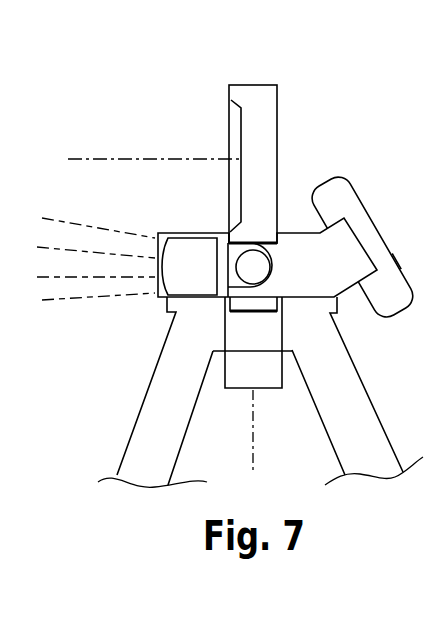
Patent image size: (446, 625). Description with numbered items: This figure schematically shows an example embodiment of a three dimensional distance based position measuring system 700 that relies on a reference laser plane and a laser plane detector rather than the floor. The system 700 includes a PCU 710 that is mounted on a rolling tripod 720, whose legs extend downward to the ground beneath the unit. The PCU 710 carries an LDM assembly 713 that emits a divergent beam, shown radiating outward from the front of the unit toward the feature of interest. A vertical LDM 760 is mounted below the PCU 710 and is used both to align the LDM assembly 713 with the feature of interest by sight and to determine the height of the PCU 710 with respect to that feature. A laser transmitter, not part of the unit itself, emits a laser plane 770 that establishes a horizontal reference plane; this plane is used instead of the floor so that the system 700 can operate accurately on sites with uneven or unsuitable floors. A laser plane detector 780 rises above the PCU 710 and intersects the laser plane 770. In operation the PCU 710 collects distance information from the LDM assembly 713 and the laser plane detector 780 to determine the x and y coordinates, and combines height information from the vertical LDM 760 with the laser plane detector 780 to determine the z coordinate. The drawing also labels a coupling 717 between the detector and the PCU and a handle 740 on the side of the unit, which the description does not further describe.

The three dimensional distance based position measuring system 700 is at (222, 253).
The PCU 710 is at (207, 228).
The LDM assembly 713 is at (180, 232).
The coupling / hinge 717 is at (224, 233).
The rolling tripod 720 is at (152, 363).
The handle 740 is at (362, 200).
The vertical LDM 760 is at (262, 368).
The laser plane 770 is at (113, 159).
The laser plane detector 780 is at (260, 85).